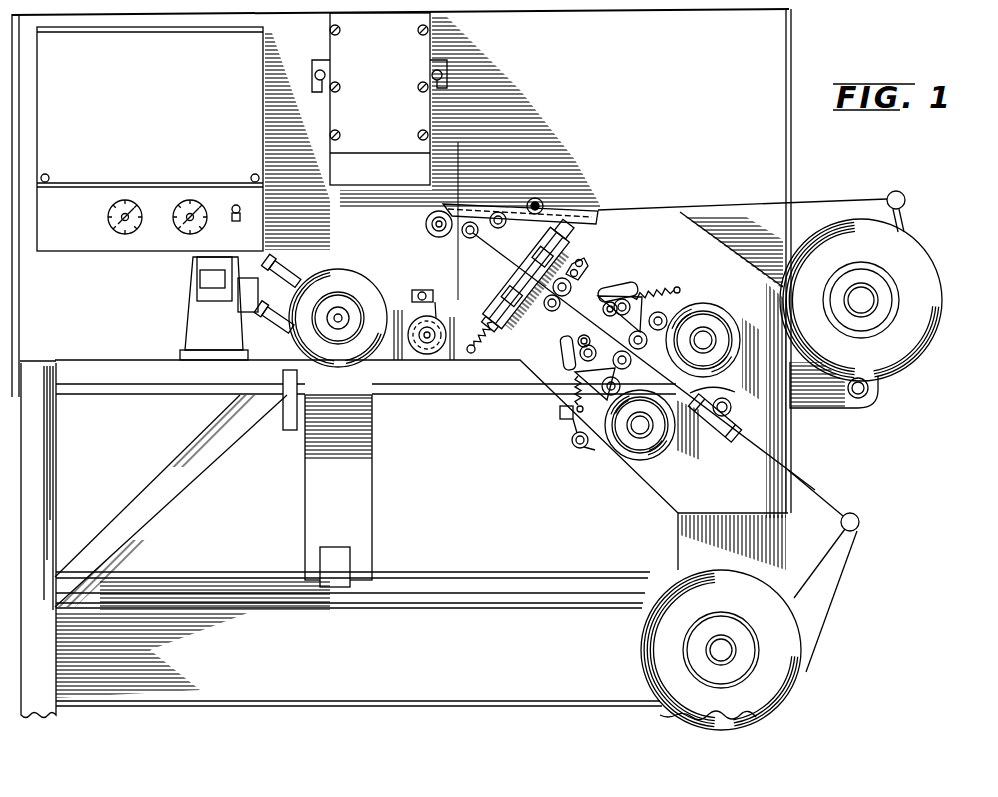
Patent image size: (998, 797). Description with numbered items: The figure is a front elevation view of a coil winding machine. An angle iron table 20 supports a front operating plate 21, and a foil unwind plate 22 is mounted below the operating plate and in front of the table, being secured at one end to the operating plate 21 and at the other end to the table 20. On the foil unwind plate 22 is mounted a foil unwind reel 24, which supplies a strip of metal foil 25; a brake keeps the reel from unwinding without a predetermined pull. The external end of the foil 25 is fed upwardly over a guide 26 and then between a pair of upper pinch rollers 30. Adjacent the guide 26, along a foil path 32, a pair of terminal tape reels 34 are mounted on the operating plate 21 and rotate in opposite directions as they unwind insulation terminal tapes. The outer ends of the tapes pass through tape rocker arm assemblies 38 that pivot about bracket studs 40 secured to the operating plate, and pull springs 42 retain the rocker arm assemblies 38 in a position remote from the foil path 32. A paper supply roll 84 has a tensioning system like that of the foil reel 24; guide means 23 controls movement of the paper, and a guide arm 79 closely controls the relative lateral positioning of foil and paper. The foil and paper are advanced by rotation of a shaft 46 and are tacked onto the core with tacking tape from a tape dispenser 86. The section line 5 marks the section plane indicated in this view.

The section line 5- 5 is at (483, 172).
The angle iron table 20 is at (464, 619).
The front operating plate 21 is at (795, 461).
The foil unwind plate 22 is at (683, 538).
The guide means 23 is at (588, 206).
The foil unwind reel 24 is at (808, 665).
The strip of metal foil 25 is at (843, 582).
The guide 26 is at (713, 434).
The upper pinch rollers 30 is at (570, 289).
The foil path 32 is at (733, 395).
The terminal tape reels 34 is at (706, 303).
The tape rocker arm assemblies 38 is at (630, 287).
The bracket studs 40 is at (642, 345).
The pull springs 42 is at (660, 288).
The shaft 46 is at (439, 237).
The guide arm 79 is at (488, 205).
The paper supply roll 84 is at (944, 292).
The tape dispenser 86 is at (193, 304).